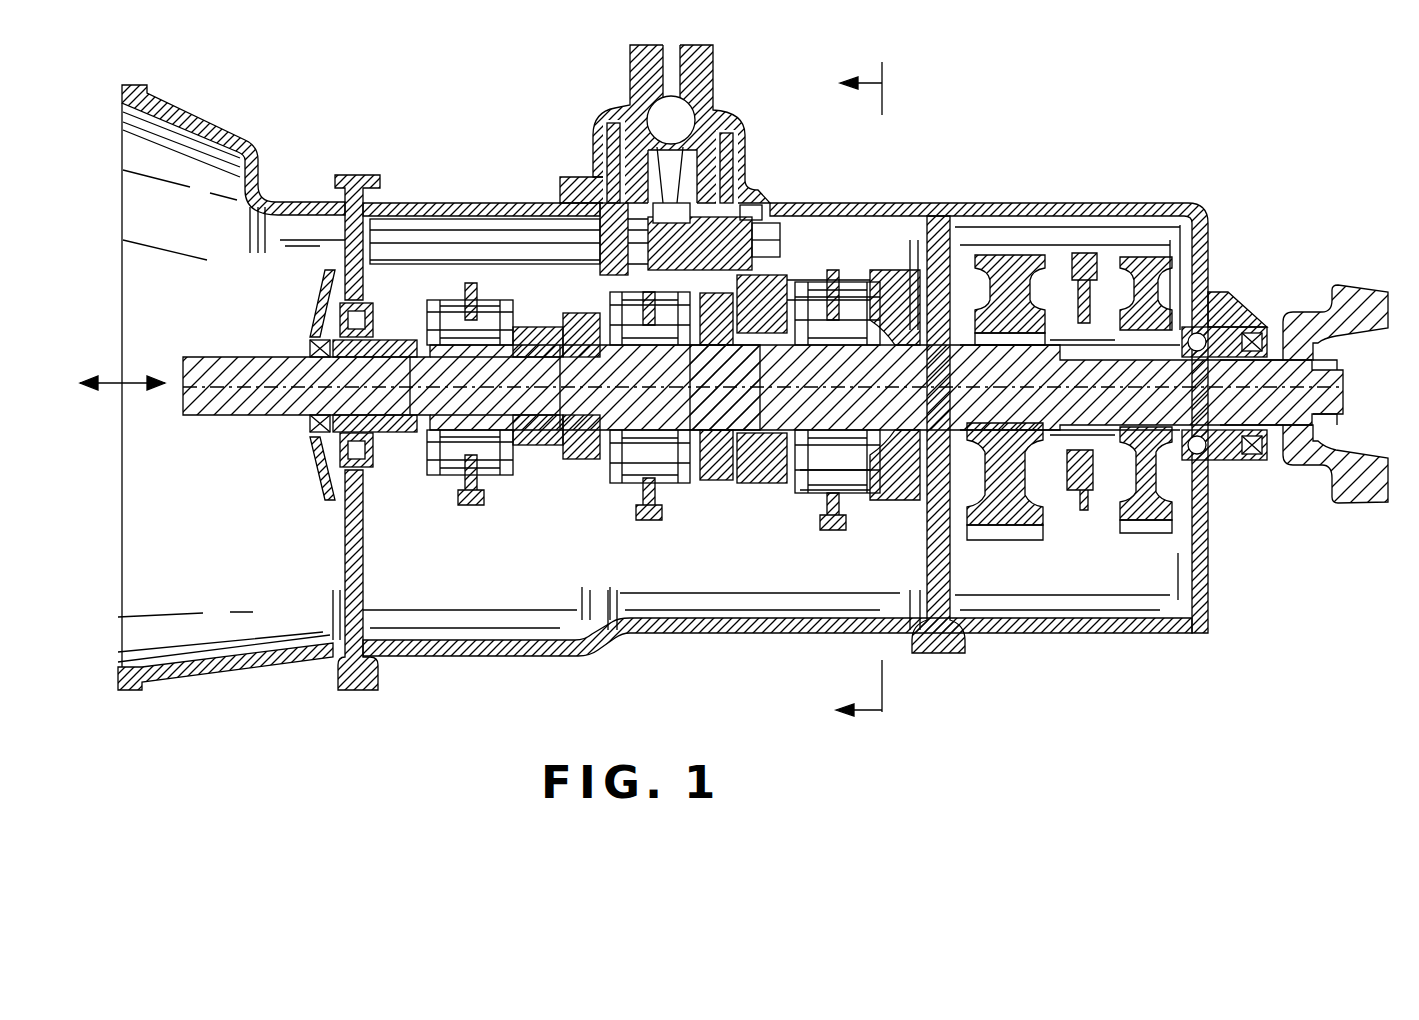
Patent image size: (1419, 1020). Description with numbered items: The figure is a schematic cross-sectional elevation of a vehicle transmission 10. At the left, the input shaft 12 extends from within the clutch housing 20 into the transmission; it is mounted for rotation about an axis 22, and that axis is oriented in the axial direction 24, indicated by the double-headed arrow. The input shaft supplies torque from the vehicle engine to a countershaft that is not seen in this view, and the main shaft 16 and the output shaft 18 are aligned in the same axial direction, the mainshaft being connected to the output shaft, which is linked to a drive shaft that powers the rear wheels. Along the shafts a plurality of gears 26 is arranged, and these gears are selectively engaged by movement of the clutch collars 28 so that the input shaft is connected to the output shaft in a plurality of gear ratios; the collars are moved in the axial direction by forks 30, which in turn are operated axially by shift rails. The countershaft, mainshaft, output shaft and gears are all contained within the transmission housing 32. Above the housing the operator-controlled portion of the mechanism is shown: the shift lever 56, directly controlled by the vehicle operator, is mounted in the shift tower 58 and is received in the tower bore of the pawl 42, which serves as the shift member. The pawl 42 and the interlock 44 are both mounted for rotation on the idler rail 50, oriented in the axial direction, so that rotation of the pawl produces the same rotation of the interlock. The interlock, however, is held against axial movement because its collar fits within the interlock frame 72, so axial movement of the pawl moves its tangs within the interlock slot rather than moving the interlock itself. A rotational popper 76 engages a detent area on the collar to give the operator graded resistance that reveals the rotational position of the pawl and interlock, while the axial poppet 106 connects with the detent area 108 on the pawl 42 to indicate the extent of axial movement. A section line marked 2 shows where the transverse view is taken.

The vehicle transmission 10 is at (1122, 118).
The input shaft 12 is at (272, 357).
The main shaft 16 is at (707, 430).
The output shaft 18 is at (1340, 388).
The clutch housing 20 is at (200, 122).
The axis 22 is at (237, 392).
The axial direction 24 is at (128, 373).
The gears 26 is at (577, 467).
The clutch collars 28 is at (1100, 282).
The forks 30 is at (1085, 253).
The transmission housing 32 is at (995, 202).
The pawl 42 is at (781, 240).
The interlock 44 is at (580, 250).
The idler rail 50 is at (775, 235).
The shift lever 56 is at (716, 133).
The shift tower 58 is at (632, 58).
The interlock frame 72 is at (600, 203).
The rotational popper 76 is at (614, 190).
The axial poppet 106 is at (755, 192).
The detent area 108 is at (765, 207).
The section line 2- 2 is at (872, 398).